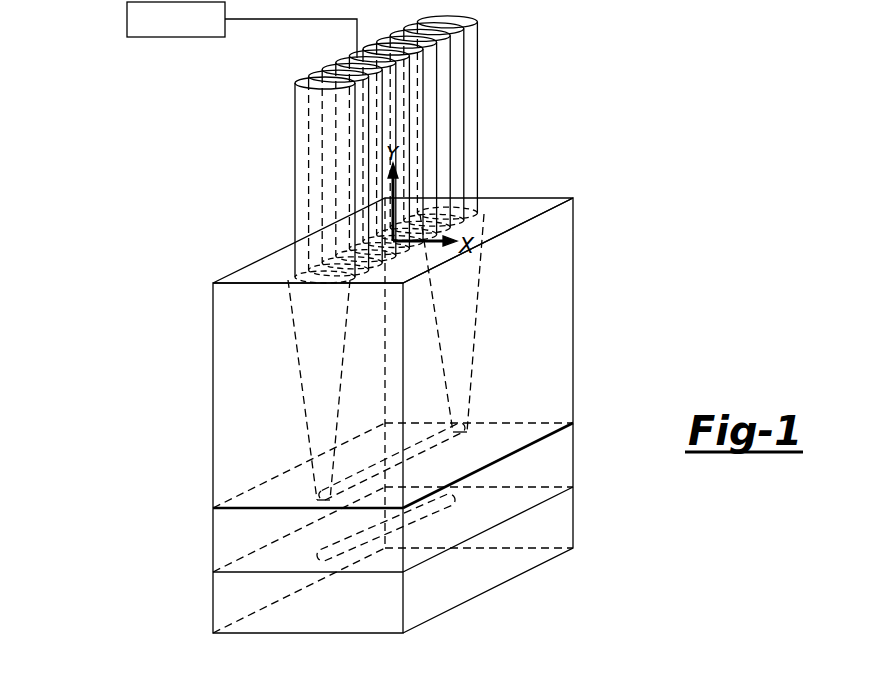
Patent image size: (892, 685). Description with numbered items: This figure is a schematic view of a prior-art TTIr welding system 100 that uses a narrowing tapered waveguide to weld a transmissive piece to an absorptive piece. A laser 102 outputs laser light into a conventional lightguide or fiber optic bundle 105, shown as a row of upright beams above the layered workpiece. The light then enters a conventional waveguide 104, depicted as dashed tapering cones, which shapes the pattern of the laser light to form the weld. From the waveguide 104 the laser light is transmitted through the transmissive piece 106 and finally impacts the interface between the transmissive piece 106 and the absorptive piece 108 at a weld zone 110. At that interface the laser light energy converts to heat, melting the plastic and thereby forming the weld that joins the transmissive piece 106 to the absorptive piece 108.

The TTIr welding system 100 is at (610, 175).
The laser 102 is at (127, 22).
The waveguide 104 is at (472, 352).
The lightguide or fiber optic bundle 105 is at (296, 137).
The transmissive piece 106 is at (213, 537).
The absorptive piece 108 is at (573, 527).
The weld zone 110 is at (437, 507).